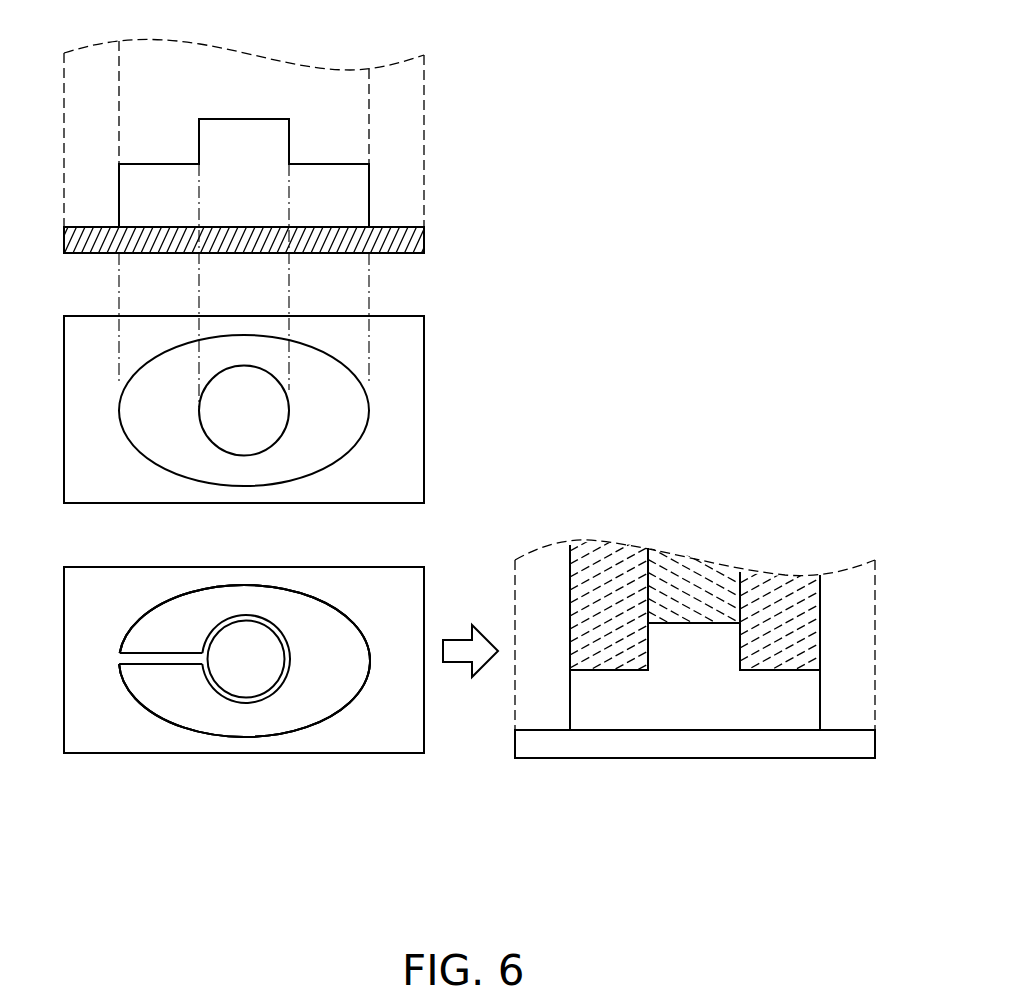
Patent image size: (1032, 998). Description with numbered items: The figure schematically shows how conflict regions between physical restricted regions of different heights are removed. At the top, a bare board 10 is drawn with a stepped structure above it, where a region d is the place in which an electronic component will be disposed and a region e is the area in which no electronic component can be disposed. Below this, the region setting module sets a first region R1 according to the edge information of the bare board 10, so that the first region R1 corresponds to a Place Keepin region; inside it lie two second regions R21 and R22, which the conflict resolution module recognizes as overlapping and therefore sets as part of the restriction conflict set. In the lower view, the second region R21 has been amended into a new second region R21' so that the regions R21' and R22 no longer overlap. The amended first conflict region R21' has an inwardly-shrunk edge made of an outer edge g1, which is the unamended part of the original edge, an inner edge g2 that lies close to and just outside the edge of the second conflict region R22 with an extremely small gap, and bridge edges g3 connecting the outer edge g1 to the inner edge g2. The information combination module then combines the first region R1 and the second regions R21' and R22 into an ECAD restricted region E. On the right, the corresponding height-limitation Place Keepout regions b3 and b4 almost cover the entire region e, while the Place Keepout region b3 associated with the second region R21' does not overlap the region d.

The region e is at (225, 75).
The region d is at (248, 183).
The bare board 10 is at (412, 240).
The first region R1 is at (424, 383).
The second region R21 is at (315, 410).
The second region R22 is at (283, 437).
The new second region R21' is at (244, 704).
The outer edge g1 is at (345, 707).
The inner edge g2 is at (210, 617).
The bridge edges g3 is at (163, 665).
The ECAD restricted region E is at (332, 815).
The Place Keepout region b3 is at (777, 592).
The Place Keepout region b4 is at (693, 582).